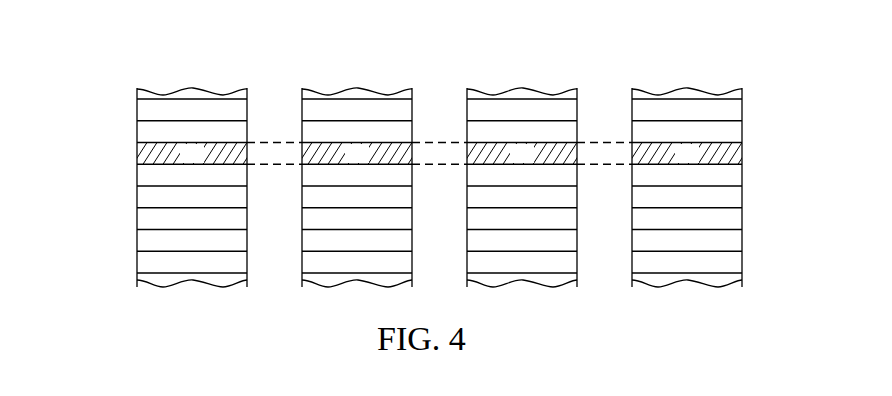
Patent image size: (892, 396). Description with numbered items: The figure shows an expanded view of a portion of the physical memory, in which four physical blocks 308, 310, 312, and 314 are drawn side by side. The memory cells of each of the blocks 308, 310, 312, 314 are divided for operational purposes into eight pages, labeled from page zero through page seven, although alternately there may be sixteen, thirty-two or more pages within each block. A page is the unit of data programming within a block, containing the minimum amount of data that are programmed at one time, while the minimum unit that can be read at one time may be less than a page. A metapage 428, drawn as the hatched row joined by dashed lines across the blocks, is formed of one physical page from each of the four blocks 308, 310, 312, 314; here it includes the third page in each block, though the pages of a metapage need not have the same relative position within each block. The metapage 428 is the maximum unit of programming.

The block 308 is at (137, 100).
The block 310 is at (302, 100).
The block 312 is at (467, 100).
The block 314 is at (632, 100).
The metapage 428 is at (137, 153).